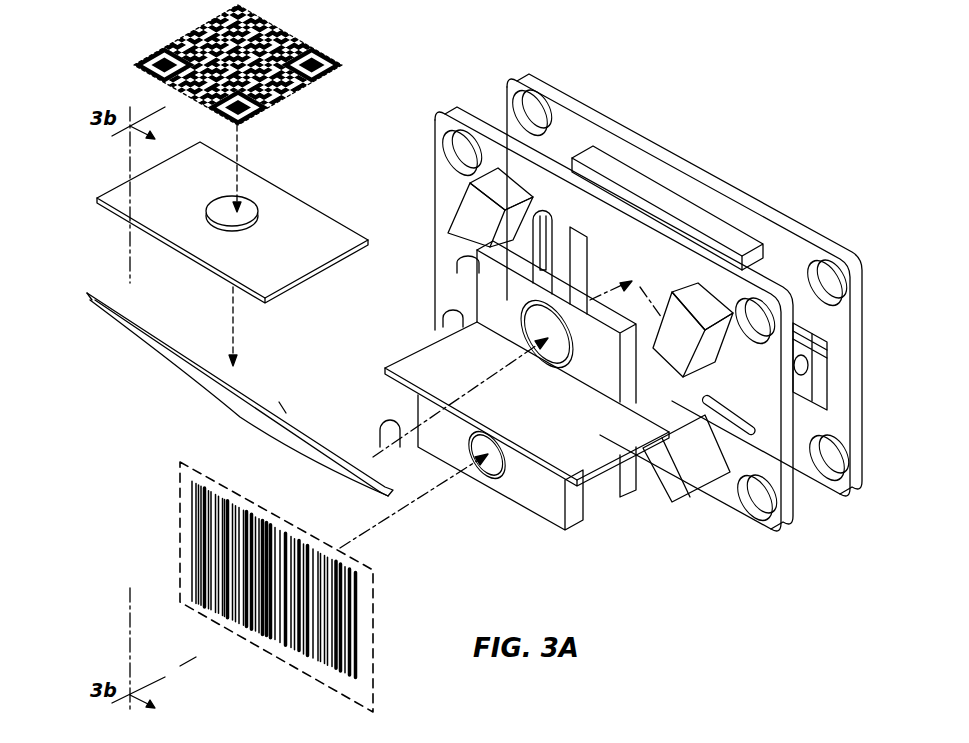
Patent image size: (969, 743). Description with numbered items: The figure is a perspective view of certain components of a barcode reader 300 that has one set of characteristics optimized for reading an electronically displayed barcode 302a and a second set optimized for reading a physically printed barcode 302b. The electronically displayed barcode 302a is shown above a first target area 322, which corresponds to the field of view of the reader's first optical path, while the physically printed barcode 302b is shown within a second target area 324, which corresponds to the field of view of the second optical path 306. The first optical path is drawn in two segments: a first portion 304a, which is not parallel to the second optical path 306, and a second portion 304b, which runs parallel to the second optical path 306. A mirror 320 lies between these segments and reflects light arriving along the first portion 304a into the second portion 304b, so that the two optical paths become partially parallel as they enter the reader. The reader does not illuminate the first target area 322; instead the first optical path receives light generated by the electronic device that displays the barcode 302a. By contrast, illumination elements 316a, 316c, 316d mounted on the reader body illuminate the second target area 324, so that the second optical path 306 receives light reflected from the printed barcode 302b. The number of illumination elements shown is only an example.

The barcode reader 300 is at (735, 156).
The electronically displayed barcode 302a is at (200, 36).
The physically printed barcode 302b is at (207, 528).
The first portion of the first optical path 304a is at (233, 333).
The second portion of the first optical path 304b is at (373, 458).
The second optical path 306 is at (390, 513).
The illumination element 316a is at (463, 210).
The illumination element 316c is at (682, 332).
The illumination element 316d is at (677, 490).
The mirror 320 is at (193, 372).
The first target area 322 is at (310, 88).
The second target area 324 is at (380, 668).